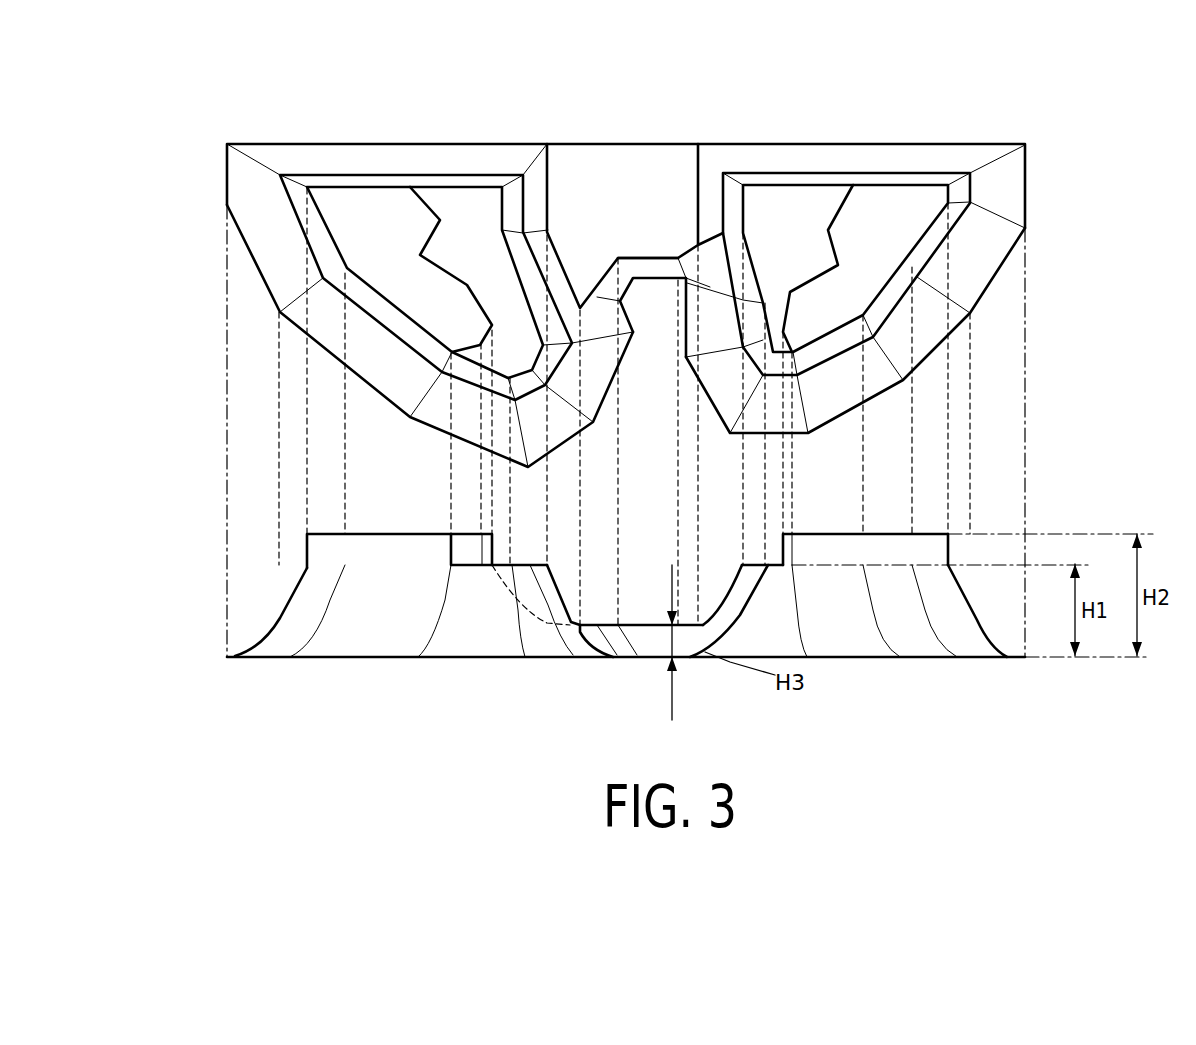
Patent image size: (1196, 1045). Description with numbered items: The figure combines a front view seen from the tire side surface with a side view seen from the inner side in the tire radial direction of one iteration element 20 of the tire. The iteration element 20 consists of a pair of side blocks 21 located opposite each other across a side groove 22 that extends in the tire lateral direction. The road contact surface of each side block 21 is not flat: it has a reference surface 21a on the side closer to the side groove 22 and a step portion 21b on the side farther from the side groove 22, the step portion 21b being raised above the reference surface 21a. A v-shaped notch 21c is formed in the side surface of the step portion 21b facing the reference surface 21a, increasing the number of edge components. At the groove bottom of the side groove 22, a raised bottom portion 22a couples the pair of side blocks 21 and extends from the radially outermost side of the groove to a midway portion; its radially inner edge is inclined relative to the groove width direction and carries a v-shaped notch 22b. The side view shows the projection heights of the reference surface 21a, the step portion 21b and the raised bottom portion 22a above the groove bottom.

The iteration element 20 is at (1030, 120).
The side block 21 is at (320, 250).
The reference surface 21a is at (437, 197).
The step portion 21b is at (350, 197).
The notch 21c is at (427, 256).
The side groove 22 is at (653, 292).
The raised bottom portion 22a is at (620, 168).
The notch 22b is at (633, 278).